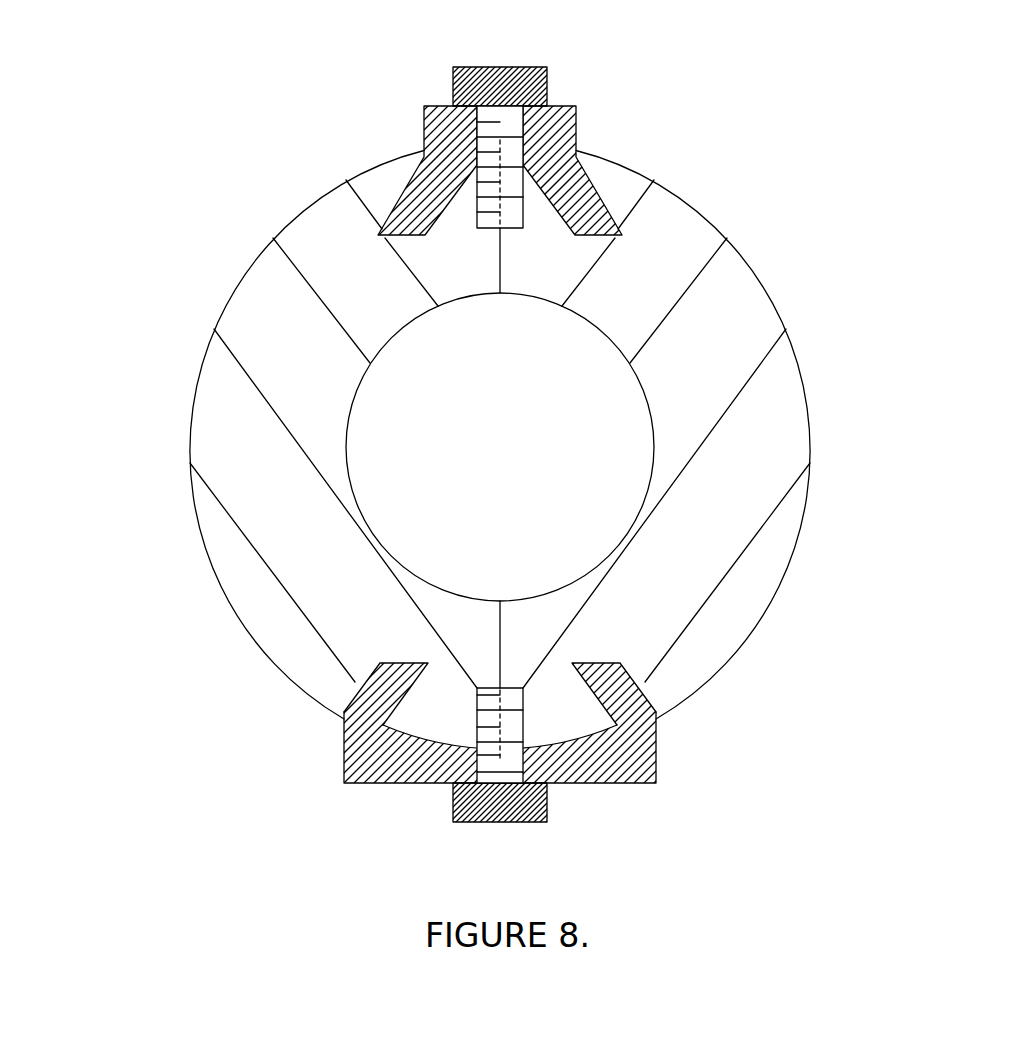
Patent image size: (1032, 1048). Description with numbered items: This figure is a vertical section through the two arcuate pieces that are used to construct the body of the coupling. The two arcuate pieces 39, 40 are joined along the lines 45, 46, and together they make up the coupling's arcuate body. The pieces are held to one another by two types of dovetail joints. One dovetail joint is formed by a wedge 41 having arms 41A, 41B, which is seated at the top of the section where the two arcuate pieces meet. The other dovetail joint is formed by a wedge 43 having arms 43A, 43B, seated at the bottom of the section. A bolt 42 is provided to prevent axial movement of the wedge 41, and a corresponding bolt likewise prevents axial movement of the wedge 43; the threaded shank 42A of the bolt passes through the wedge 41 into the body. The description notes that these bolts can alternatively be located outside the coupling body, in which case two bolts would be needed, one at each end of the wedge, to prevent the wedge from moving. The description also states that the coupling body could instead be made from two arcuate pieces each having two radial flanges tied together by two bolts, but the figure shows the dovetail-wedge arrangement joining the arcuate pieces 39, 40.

The arcuate piece 39 is at (228, 432).
The arcuate piece 40 is at (698, 560).
The wedge 41 is at (487, 126).
The arm 41A is at (423, 197).
The arm 41B is at (580, 190).
The bolt 42 is at (455, 86).
The upper bolt threaded shank 42A is at (523, 228).
The wedge 43 is at (446, 736).
The arm 43A is at (500, 695).
The arm 43B is at (620, 688).
The line 45 is at (538, 298).
The line 46 is at (500, 635).